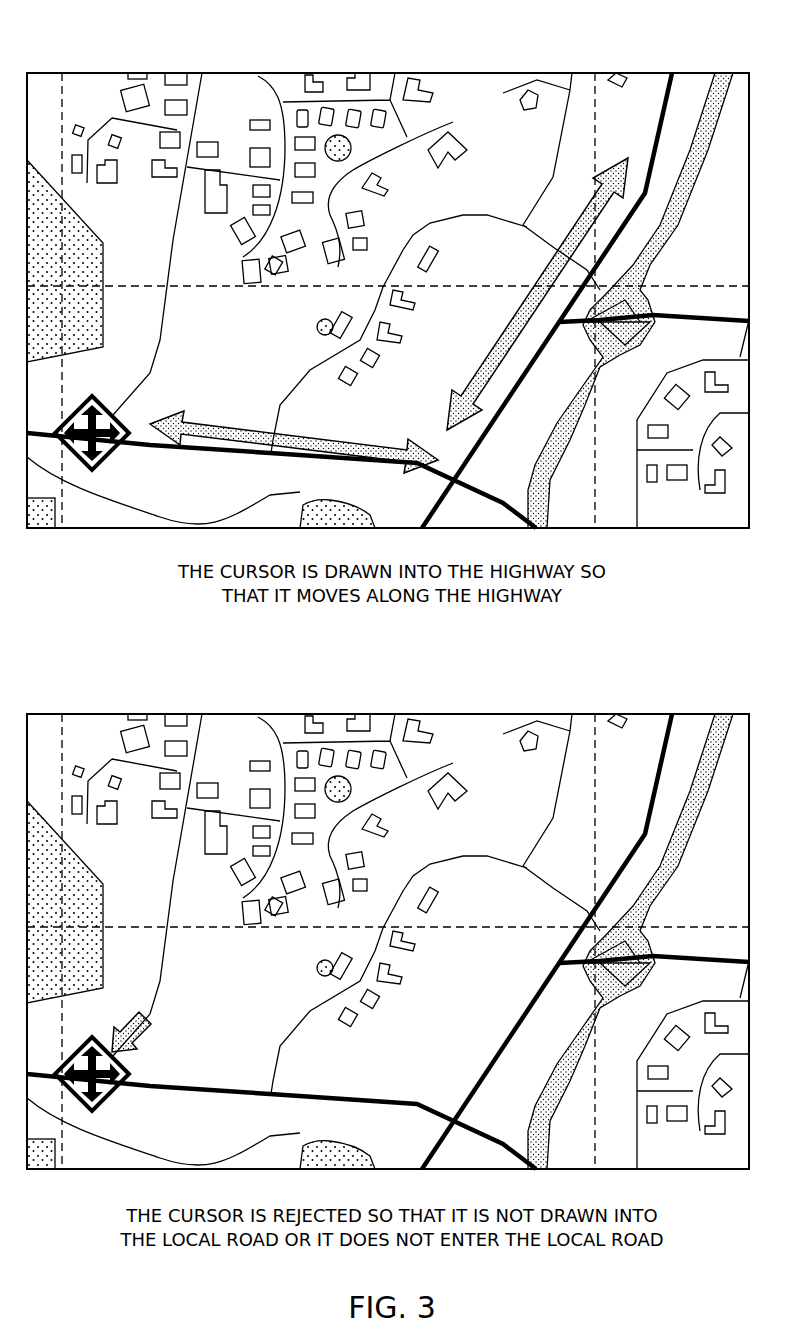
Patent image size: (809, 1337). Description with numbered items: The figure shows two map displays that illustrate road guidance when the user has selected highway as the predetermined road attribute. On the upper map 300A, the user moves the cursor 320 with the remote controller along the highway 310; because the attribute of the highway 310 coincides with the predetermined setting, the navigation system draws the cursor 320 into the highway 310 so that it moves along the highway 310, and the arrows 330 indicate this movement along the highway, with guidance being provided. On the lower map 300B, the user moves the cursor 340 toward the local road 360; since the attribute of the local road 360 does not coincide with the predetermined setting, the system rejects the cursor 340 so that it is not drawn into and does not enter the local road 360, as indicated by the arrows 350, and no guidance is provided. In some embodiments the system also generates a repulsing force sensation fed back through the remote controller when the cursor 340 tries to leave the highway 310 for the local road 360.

The map 300A is at (652, 73).
The map 300B is at (652, 714).
The highway 310 is at (222, 457).
The cursor 320 is at (100, 468).
The arrows 330 is at (216, 420).
The cursor 340 is at (125, 1071).
The arrows 350 is at (114, 1036).
The local road 360 is at (164, 323).